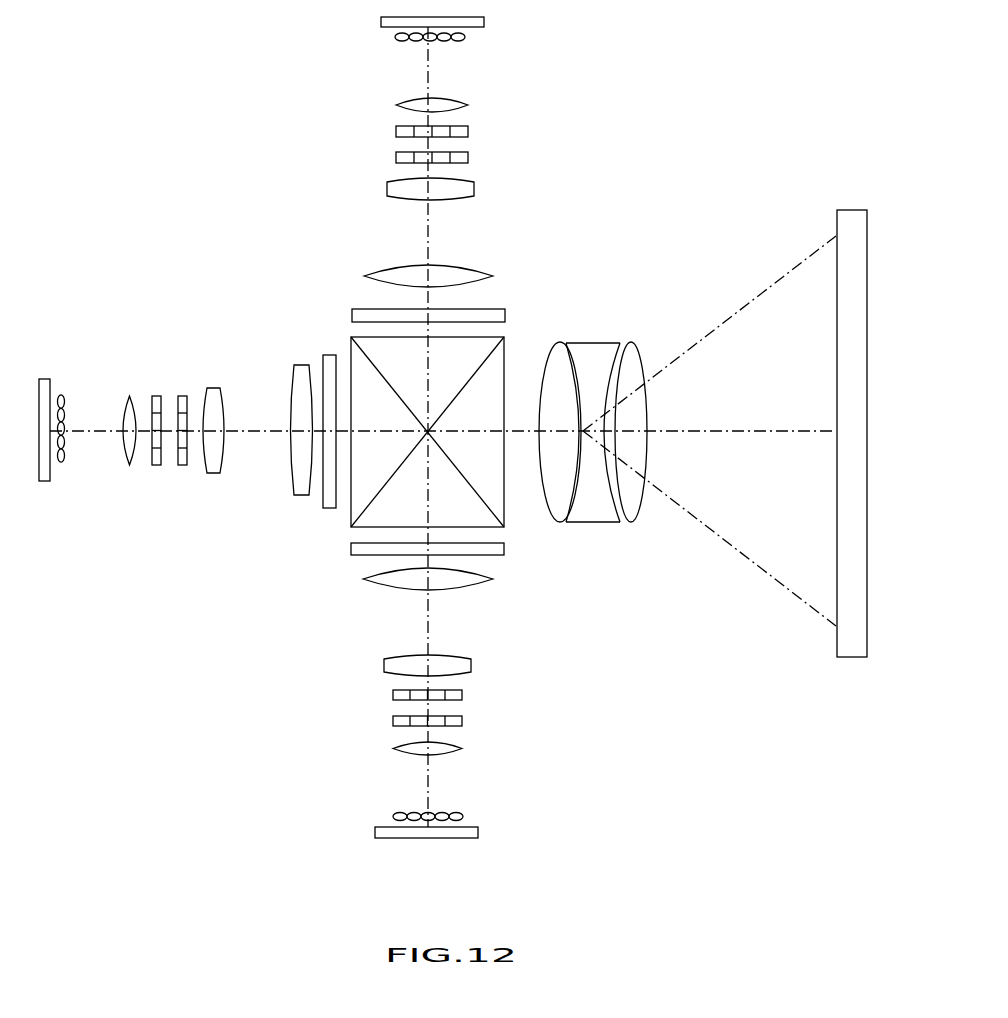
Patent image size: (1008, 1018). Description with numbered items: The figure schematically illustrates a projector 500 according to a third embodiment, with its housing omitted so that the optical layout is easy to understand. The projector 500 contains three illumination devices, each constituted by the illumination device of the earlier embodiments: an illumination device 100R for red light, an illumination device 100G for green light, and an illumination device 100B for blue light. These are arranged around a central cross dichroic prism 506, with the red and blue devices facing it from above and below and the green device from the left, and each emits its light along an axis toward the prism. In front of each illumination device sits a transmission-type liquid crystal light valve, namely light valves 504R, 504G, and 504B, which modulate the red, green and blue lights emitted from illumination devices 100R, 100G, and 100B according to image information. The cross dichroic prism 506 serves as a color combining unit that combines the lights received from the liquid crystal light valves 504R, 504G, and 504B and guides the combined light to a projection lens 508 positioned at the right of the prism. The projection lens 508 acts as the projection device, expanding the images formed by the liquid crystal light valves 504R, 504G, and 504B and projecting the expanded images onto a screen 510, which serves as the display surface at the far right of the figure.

The projector 500 is at (199, 172).
The illumination device for red light 100R is at (505, 17).
The illumination device for green light 100G is at (314, 506).
The illumination device for blue light 100B is at (520, 565).
The liquid crystal light valve 504R is at (360, 313).
The liquid crystal light valve 504G is at (330, 360).
The liquid crystal light valve 504B is at (365, 556).
The cross dichroic prism 506 is at (500, 521).
The projection lens 508 is at (647, 337).
The screen 510 is at (853, 220).